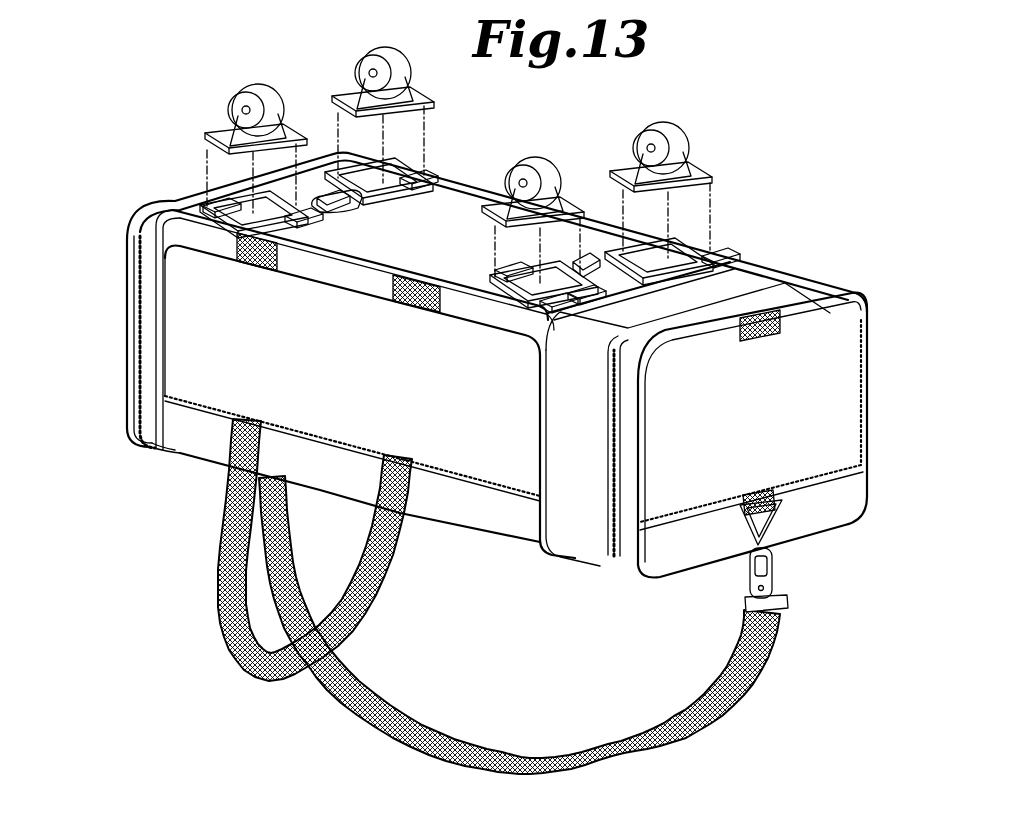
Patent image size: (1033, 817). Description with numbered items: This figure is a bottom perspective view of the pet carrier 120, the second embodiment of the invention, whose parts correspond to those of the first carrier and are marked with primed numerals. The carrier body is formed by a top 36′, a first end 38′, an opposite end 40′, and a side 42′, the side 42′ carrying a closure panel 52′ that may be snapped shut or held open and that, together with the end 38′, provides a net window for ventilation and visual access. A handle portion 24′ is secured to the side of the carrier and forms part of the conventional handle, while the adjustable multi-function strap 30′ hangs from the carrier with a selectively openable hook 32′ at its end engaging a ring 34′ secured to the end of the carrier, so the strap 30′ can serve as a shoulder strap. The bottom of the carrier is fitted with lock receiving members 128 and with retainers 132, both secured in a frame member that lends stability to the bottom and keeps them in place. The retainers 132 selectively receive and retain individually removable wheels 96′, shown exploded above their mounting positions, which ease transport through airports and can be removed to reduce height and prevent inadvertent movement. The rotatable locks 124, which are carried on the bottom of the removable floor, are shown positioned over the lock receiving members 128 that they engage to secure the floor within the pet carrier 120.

The pet carrier 120 is at (122, 172).
The end 38′ is at (108, 262).
The side 42′ is at (192, 346).
The closure panel 52′ is at (425, 385).
The top 36′ is at (506, 548).
The end 40′ is at (466, 222).
The individually removable wheels 96′ is at (253, 82).
The retainers 132 is at (203, 196).
The rotatable locks 124 is at (320, 196).
The lock receiving members 128 is at (367, 202).
The handle portion 24′ is at (368, 620).
The multi-function strap 30′ is at (757, 662).
The selectively openable hook 32′ is at (772, 571).
The ring 34′ is at (784, 507).